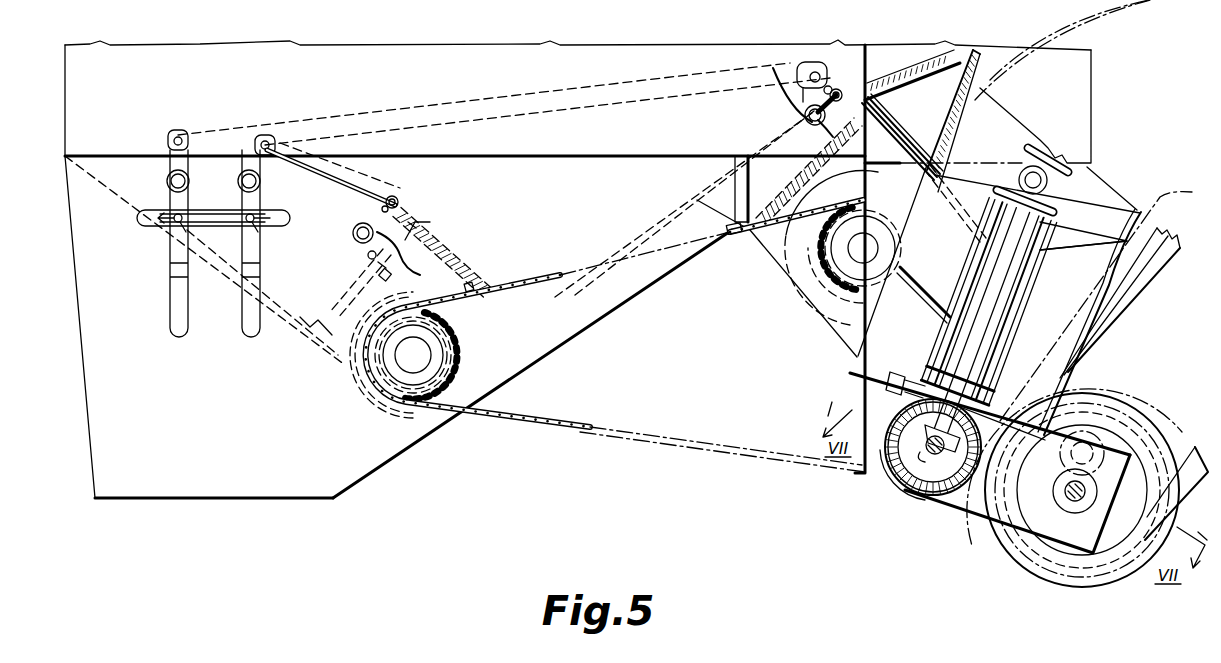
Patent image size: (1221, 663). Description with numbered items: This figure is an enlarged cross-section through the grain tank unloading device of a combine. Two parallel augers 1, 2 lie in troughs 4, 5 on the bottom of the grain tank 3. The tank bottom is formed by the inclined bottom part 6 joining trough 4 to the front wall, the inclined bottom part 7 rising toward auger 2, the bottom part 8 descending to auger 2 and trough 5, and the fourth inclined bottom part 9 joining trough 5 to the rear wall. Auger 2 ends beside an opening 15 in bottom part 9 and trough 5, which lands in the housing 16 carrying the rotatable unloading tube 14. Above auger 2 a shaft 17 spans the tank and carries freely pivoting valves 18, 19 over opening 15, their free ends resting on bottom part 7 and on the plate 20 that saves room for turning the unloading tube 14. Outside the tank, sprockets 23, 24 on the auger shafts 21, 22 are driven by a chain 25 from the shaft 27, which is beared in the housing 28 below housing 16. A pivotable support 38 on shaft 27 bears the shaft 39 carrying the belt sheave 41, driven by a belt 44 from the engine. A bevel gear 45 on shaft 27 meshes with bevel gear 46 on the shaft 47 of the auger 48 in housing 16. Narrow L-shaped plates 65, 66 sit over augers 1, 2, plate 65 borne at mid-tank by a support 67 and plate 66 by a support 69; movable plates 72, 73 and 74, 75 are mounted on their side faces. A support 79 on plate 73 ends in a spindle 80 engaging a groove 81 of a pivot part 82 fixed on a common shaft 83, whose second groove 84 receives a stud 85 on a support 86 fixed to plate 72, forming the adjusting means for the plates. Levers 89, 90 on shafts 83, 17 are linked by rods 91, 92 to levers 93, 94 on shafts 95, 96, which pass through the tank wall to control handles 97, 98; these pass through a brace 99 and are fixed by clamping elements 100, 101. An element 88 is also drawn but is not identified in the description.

The auger 1 is at (386, 418).
The auger 2 is at (815, 310).
The grain tank 3 is at (960, 60).
The trough 4 is at (378, 412).
The trough 5 is at (836, 322).
The inclined bottom part 6 is at (278, 312).
The inclined bottom part 7 is at (537, 310).
The bottom part 8 is at (745, 245).
The fourth inclined bottom part 9 is at (1060, 193).
The unloading tube 14 is at (1105, 10).
The opening 15 is at (863, 332).
The housing 16 is at (1087, 307).
The shaft 17 is at (785, 87).
The valve 18 is at (682, 206).
The valve 19 is at (905, 86).
The plate 20 is at (978, 41).
The shaft 21 is at (447, 372).
The shaft 22 is at (861, 259).
The sprocket 23 is at (462, 355).
The sprocket 24 is at (815, 295).
The chain 25 is at (516, 425).
The shaft 27 is at (931, 455).
The housing 28 is at (928, 495).
The pivotable support 38 is at (968, 508).
The shaft 39 is at (1065, 490).
The belt sheave 41 is at (1098, 414).
The belt 44 is at (1148, 280).
The bevel gear 45 is at (897, 475).
The bevel gear 46 is at (896, 391).
The shaft 47 is at (985, 325).
The auger 48 is at (1077, 237).
The plate 65 is at (432, 240).
The plate 66 is at (902, 145).
The support 67 is at (470, 282).
The support 69 is at (726, 228).
The plate 72 is at (352, 300).
The plate 73 is at (490, 282).
The plate 74 is at (800, 183).
The plate 75 is at (882, 125).
The support 79 is at (452, 260).
The spindle 80 is at (398, 204).
The groove 81 is at (383, 209).
The pivot part 82 is at (416, 228).
The common shaft 83 is at (353, 232).
The second groove 84 is at (368, 255).
The stud 85 is at (378, 262).
The support 86 is at (394, 280).
The phantom link 88 is at (955, 191).
The lever 89 is at (407, 262).
The lever 90 is at (811, 60).
The rod 91 is at (362, 187).
The rod 92 is at (578, 90).
The lever 93 is at (252, 155).
The lever 94 is at (170, 156).
The shaft 95 is at (259, 183).
The shaft 96 is at (168, 184).
The control handle 97 is at (242, 327).
The control handle 98 is at (170, 327).
The brace 99 is at (172, 227).
The clamping element 100 is at (262, 217).
The clamping element 101 is at (190, 215).